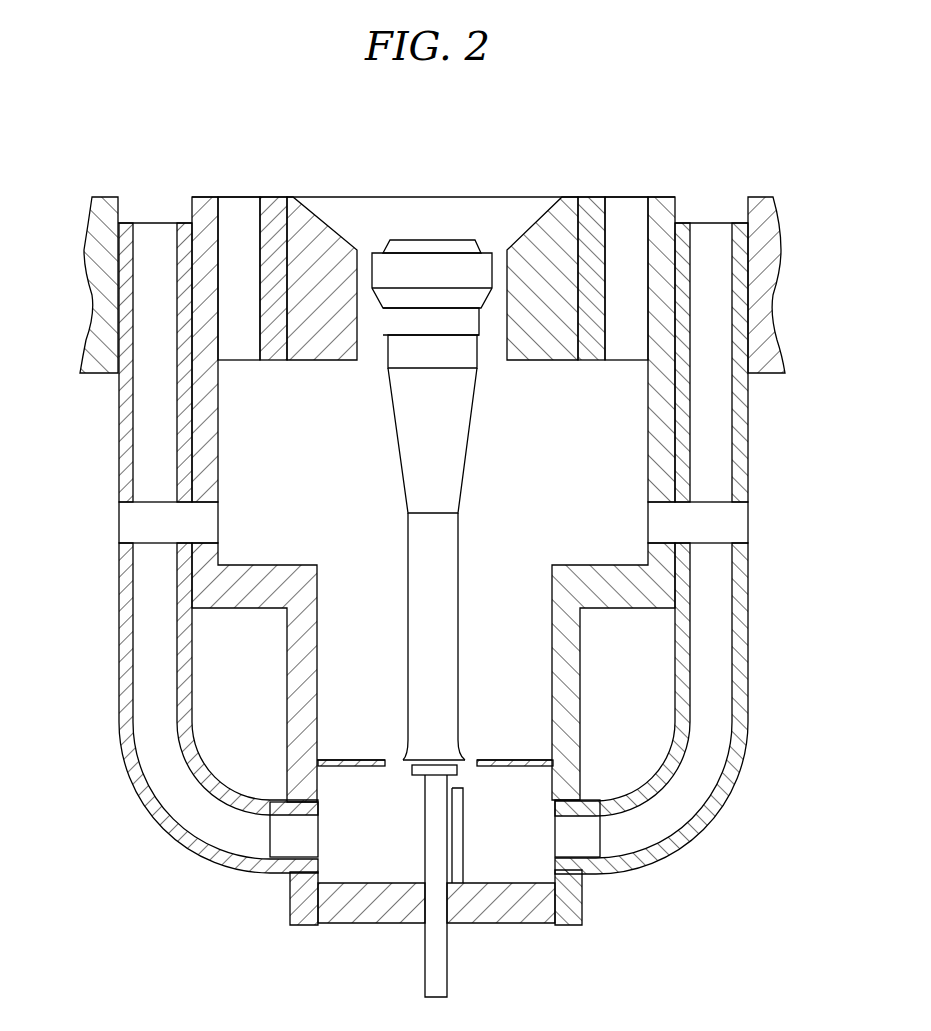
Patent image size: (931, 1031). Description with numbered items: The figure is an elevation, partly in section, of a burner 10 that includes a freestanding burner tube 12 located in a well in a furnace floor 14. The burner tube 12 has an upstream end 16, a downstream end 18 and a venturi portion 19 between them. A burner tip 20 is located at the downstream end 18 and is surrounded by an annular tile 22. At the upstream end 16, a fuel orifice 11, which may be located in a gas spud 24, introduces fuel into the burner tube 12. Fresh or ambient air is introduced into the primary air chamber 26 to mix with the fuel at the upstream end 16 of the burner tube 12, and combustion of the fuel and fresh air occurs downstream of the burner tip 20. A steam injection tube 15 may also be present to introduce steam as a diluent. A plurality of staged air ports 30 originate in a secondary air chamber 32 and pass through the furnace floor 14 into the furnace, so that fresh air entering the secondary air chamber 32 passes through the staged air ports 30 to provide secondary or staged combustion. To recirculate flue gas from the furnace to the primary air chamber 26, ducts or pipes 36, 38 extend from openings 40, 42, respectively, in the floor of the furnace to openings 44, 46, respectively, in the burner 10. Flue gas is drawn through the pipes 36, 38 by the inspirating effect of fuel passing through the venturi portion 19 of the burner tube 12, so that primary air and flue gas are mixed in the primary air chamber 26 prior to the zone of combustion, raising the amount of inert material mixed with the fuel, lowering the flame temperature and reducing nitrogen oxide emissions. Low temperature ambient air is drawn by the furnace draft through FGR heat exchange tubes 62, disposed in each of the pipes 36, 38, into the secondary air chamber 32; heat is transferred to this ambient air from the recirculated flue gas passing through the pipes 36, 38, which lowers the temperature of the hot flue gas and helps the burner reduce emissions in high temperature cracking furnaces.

The burner 10 is at (500, 160).
The fuel orifice 11 is at (432, 760).
The burner tube 12 is at (460, 575).
The furnace floor 14 is at (115, 200).
The steam injection tube 15 is at (487, 924).
The upstream end 16 is at (468, 760).
The downstream end 18 is at (402, 240).
The venturi portion 19 is at (380, 453).
The burner tip 20 is at (443, 240).
The annular tile 22 is at (570, 197).
The gas spud 24 is at (423, 776).
The primary air chamber 26 is at (516, 841).
The staged air ports 30 is at (252, 248).
The secondary air chamber 32 is at (567, 436).
The duct or pipe 36 is at (118, 496).
The duct or pipe 38 is at (750, 700).
The opening 40 is at (152, 223).
The opening 42 is at (710, 223).
The opening 44 is at (306, 843).
The opening 46 is at (591, 843).
The FGR heat exchange tubes 62 is at (183, 536).